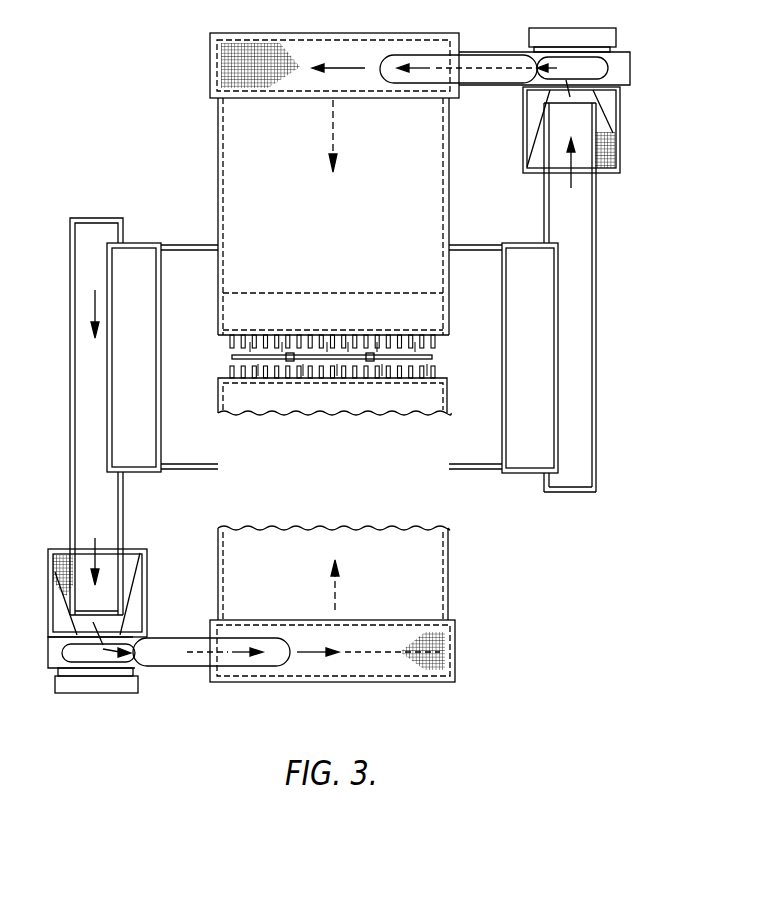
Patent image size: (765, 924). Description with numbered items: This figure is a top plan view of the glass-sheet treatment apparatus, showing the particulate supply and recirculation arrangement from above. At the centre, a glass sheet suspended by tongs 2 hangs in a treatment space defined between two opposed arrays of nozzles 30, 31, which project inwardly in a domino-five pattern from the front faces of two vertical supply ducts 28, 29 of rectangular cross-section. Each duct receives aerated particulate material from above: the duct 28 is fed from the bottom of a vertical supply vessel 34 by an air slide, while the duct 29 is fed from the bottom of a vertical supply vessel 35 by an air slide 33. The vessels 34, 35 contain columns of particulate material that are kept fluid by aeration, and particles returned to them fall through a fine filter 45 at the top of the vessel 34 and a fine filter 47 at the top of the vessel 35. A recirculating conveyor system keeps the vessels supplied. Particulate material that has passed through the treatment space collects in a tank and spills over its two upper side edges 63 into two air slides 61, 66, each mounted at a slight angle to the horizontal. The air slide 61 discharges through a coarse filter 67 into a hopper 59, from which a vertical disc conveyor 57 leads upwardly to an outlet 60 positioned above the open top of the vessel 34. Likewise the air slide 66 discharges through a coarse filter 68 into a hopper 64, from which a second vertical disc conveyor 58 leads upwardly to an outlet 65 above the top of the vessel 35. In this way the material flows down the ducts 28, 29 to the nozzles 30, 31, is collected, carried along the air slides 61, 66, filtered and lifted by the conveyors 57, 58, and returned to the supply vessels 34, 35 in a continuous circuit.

The tongs 2 is at (288, 353).
The vertical supply duct 28 is at (315, 302).
The vertical supply duct 29 is at (266, 393).
The array of nozzles 30 is at (400, 345).
The array of nozzles 31 is at (343, 363).
The air slide 33 is at (403, 590).
The vertical supply vessel 34 is at (382, 42).
The vertical supply vessel 35 is at (340, 675).
The fine filter 45 is at (240, 48).
The fine filter 47 is at (430, 662).
The vertical disc conveyor 57 is at (573, 66).
The vertical disc conveyor 58 is at (85, 652).
The hopper 59 is at (523, 122).
The outlet 60 is at (492, 62).
The air slide 61 is at (557, 202).
The upper side edge 63 is at (157, 357).
The hopper 64 is at (147, 608).
The outlet 65 is at (172, 653).
The air slide 66 is at (83, 424).
The coarse filter 67 is at (614, 140).
The coarse filter 68 is at (62, 555).